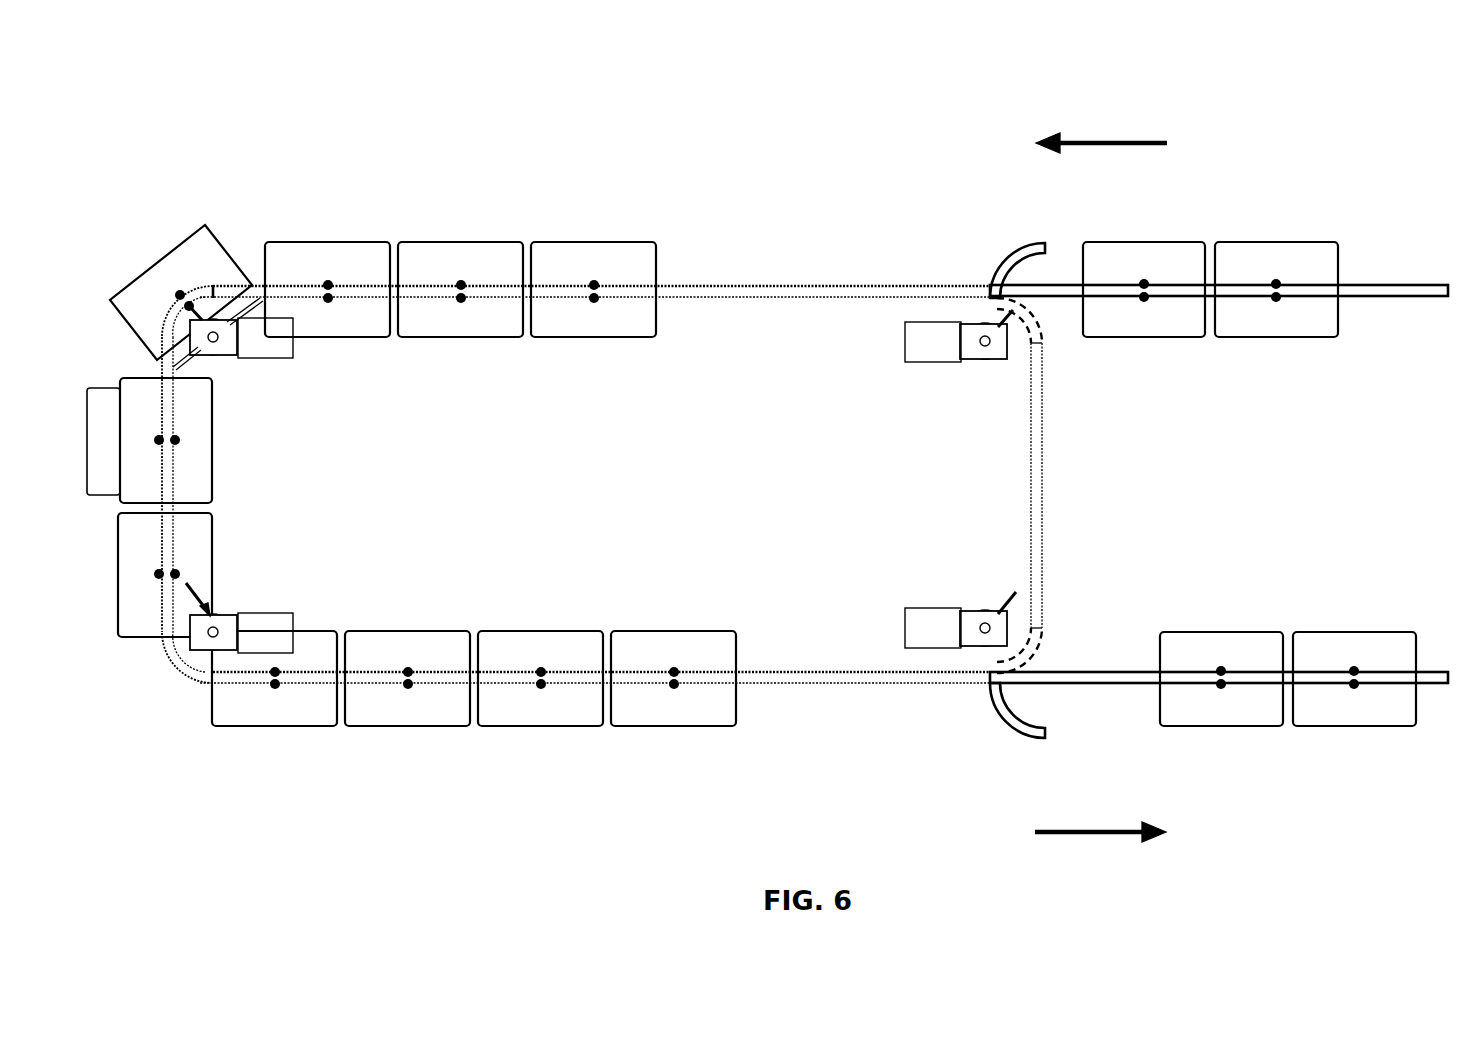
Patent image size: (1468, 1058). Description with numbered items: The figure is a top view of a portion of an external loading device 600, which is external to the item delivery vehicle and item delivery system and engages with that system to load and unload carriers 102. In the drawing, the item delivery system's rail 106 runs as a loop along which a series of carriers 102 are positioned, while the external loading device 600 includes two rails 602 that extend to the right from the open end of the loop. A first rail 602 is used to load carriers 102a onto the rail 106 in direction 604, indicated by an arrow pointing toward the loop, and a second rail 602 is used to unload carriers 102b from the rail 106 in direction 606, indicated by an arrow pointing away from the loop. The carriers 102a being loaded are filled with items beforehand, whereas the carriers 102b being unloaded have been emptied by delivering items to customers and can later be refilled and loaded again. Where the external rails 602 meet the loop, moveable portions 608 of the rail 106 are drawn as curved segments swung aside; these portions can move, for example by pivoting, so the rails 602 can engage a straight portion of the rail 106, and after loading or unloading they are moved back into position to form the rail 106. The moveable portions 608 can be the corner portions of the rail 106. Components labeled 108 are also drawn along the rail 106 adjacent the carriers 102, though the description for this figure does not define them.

The external loading device 600 is at (1350, 128).
The rail 602 is at (1360, 292).
The direction 604 is at (1105, 143).
The direction 606 is at (1098, 832).
The moveable portion 608 is at (1000, 248).
The carrier 102 is at (585, 242).
The carrier 102a is at (1130, 242).
The carrier 102b is at (1220, 726).
The rail 106 is at (835, 292).
The carrier 108 is at (905, 342).